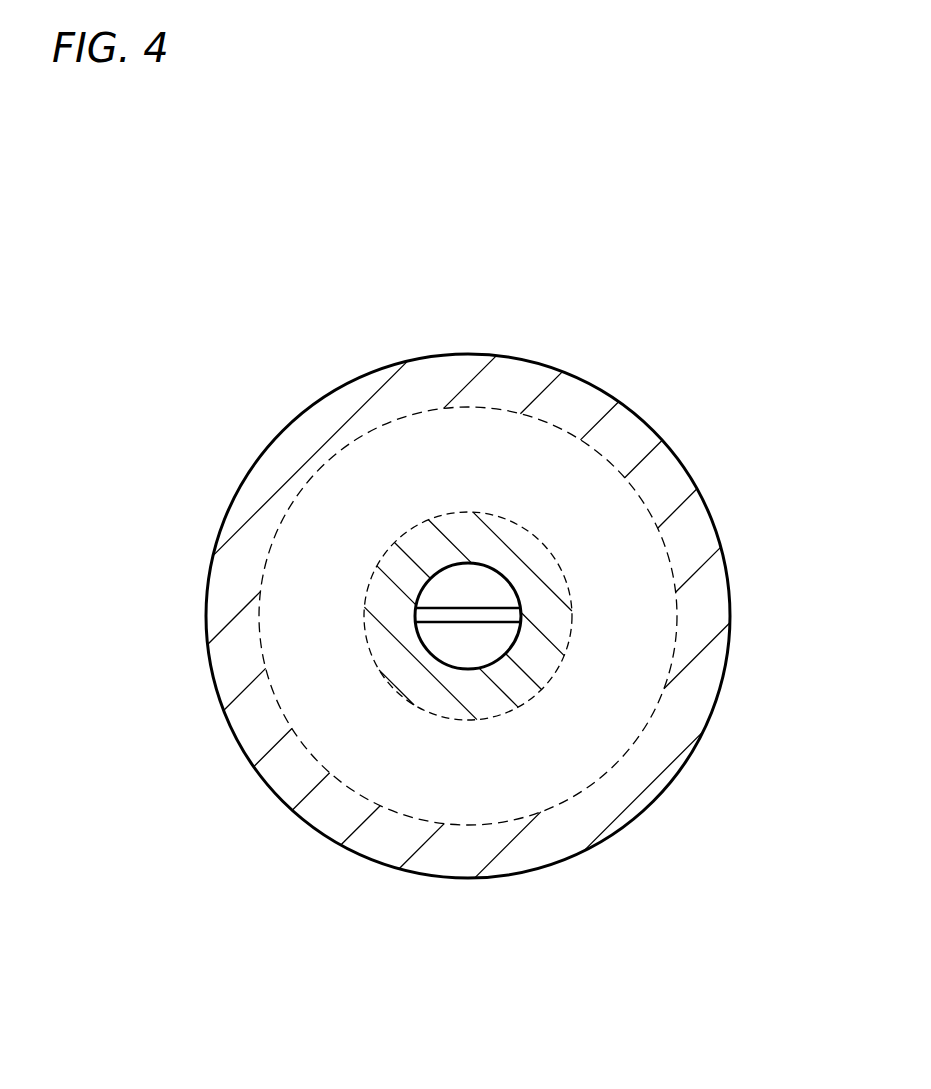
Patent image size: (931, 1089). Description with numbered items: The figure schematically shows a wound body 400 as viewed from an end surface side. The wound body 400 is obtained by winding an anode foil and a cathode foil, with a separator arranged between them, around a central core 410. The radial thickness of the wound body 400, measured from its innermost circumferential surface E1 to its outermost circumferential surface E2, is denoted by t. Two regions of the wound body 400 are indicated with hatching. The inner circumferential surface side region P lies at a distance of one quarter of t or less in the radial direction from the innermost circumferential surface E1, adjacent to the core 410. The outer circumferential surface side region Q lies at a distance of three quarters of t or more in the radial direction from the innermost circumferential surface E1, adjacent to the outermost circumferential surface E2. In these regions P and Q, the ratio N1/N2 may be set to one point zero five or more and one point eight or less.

The wound body 400 is at (289, 376).
The core 410 is at (447, 593).
The outer circumferential surface side region Q is at (518, 393).
The inner circumferential surface side region P is at (388, 625).
The thickness of the wound body in a radial direction t is at (468, 355).
The outermost circumferential surface E2 is at (702, 489).
The innermost circumferential surface E1 is at (458, 662).